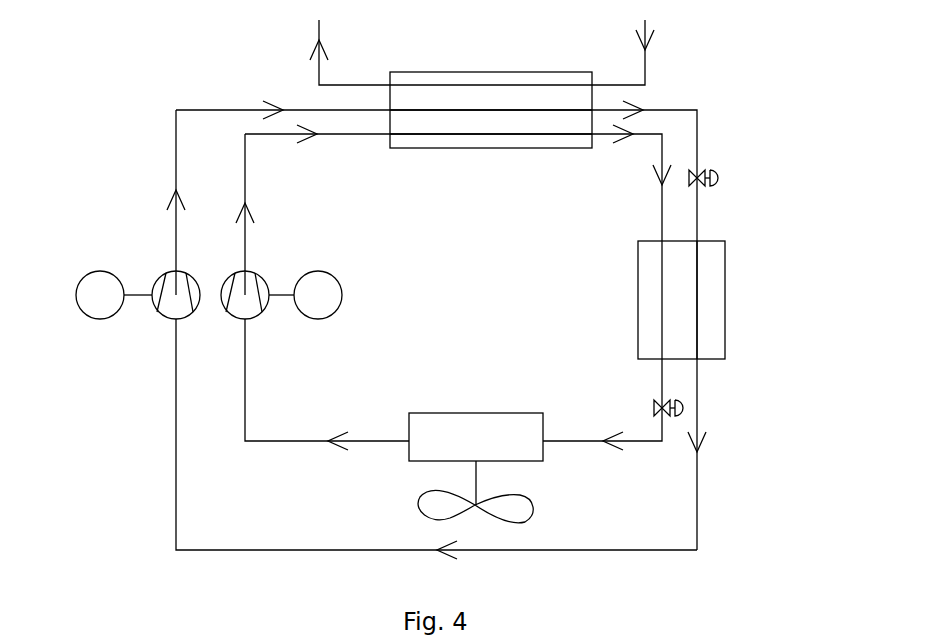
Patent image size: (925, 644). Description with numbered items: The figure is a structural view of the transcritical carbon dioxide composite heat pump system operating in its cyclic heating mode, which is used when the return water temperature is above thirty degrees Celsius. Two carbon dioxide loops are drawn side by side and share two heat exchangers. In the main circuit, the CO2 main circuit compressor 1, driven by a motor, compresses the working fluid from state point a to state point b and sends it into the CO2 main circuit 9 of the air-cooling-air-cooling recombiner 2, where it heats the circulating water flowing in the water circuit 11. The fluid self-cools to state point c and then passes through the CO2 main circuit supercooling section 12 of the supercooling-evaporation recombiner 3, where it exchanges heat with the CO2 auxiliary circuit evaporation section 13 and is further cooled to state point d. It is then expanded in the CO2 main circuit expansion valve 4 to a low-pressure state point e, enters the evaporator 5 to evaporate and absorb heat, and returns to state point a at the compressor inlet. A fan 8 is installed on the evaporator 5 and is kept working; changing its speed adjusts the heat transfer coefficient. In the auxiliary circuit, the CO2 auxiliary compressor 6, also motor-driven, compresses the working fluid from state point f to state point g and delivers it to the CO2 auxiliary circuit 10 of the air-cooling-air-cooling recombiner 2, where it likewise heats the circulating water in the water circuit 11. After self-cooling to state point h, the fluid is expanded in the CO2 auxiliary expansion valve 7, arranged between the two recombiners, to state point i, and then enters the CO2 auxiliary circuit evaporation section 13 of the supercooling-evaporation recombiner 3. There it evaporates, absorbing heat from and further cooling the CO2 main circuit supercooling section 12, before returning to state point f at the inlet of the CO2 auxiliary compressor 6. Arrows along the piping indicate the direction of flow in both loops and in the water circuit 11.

The CO2 main circuit compressor 1 is at (250, 310).
The air-cooling-air-cooling recombiner 2 is at (532, 143).
The supercooling-evaporation recombiner 3 is at (712, 295).
The CO2 main circuit expansion valve 4 is at (673, 398).
The evaporator 5 is at (475, 422).
The CO2 auxiliary compressor 6 is at (167, 307).
The CO2 auxiliary expansion valve 7 is at (697, 173).
The fan 8 is at (515, 507).
The CO2 main circuit 9 is at (435, 134).
The CO2 auxiliary circuit 10 is at (435, 109).
The water circuit 11 is at (435, 85).
The CO2 main circuit supercooling section 12 is at (662, 278).
The CO2 auxiliary circuit evaporation section 13 is at (697, 278).
The state point a is at (245, 380).
The state point b is at (245, 248).
The state point c is at (662, 215).
The state point d is at (662, 380).
The state point e is at (647, 442).
The state point f is at (176, 380).
The state point g is at (176, 248).
The state point h is at (680, 110).
The state point i is at (697, 213).